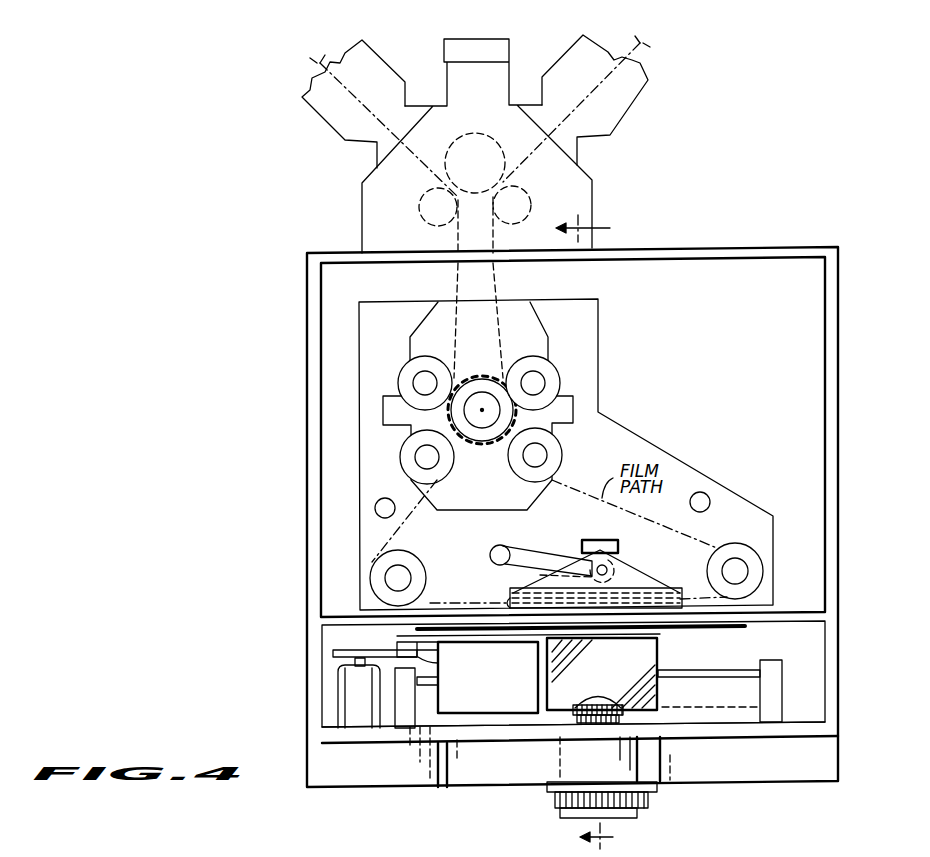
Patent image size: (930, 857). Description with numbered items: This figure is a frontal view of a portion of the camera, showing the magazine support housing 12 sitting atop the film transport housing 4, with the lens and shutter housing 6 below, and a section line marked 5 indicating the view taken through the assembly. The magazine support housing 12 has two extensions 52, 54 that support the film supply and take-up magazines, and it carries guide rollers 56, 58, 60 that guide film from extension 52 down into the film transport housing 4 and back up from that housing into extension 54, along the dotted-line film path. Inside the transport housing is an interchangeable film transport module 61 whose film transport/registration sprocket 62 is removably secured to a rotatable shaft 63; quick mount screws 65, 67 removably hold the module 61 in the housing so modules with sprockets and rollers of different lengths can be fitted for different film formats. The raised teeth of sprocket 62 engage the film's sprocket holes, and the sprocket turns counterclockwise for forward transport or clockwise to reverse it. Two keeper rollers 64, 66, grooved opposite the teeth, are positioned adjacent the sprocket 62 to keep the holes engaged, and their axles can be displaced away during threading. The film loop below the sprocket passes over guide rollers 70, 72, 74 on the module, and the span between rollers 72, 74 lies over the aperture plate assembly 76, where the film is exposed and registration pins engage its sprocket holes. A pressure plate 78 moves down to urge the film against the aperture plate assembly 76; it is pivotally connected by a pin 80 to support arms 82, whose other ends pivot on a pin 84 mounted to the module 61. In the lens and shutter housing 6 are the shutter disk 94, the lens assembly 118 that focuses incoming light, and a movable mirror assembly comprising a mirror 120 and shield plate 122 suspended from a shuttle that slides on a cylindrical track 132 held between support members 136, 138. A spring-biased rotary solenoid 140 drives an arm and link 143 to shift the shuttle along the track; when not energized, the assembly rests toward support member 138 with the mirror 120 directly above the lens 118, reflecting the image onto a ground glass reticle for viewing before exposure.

The film transport housing 4 is at (838, 378).
The section line 5- 5 is at (592, 532).
The lens and shutter housing 6 is at (838, 690).
The magazine support housing 12 is at (463, 39).
The extension 52 is at (362, 40).
The extension 54 is at (583, 36).
The guide roller 56 is at (481, 138).
The guide roller 58 is at (420, 210).
The guide roller 60 is at (531, 206).
The film transport module 61 is at (645, 440).
The film transport/registration sprocket 62 is at (481, 383).
The rotatable shaft 63 is at (483, 422).
The keeper roller 64 is at (412, 369).
The quick mount screw 65 is at (383, 498).
The keeper roller 66 is at (548, 368).
The quick mount screw 67 is at (710, 496).
The guide roller 70 is at (563, 457).
The guide roller 72 is at (404, 562).
The guide roller 74 is at (707, 562).
The aperture plate assembly 76 is at (505, 610).
The pressure plate 78 is at (641, 541).
The pin 80 is at (607, 573).
The support arm 82 is at (540, 557).
The pin 84 is at (500, 547).
The shutter disk 94 is at (745, 629).
The lens assembly 118 is at (657, 797).
The mirror 120 is at (602, 680).
The shield plate 122 is at (488, 677).
The cylindrical track 132 is at (675, 678).
The support member 136 is at (772, 712).
The support member 138 is at (407, 720).
The rotary solenoid 140 is at (338, 712).
The link 143 is at (428, 658).